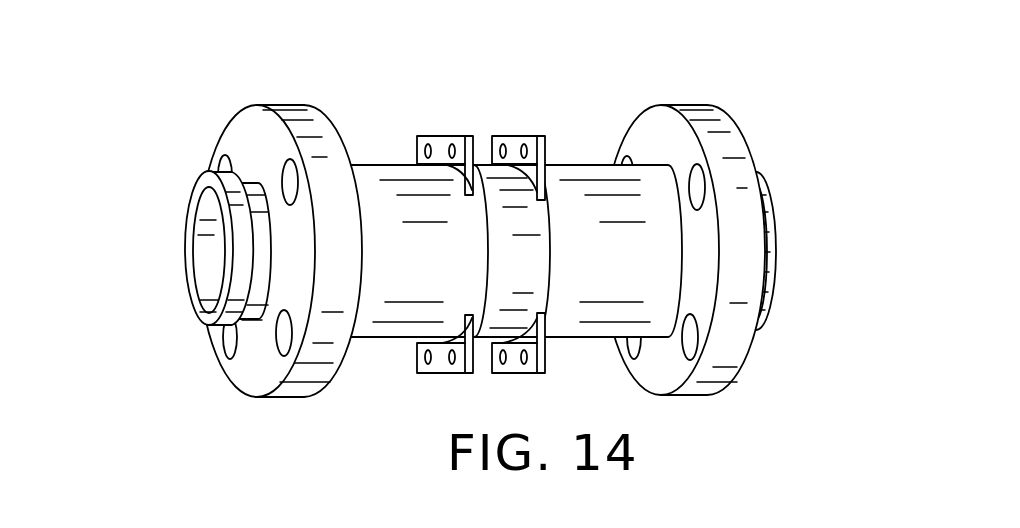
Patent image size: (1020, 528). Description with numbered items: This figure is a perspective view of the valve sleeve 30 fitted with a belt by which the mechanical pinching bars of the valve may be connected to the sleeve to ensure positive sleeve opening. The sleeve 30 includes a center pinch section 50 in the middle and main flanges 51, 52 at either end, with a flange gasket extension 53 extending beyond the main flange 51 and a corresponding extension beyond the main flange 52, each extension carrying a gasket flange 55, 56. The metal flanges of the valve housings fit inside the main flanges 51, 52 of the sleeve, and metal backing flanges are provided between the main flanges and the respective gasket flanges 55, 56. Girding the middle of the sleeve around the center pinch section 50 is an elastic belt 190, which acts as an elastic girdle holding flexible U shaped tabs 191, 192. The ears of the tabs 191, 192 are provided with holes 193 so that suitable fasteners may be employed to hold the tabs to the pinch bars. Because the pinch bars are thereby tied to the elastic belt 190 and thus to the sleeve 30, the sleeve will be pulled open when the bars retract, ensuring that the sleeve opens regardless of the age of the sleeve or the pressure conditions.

The sleeve 30 is at (486, 230).
The center pinch section 50 is at (417, 308).
The main flange 51 is at (285, 104).
The main flange 52 is at (730, 228).
The flange gasket extension 53 is at (188, 297).
The gasket flange 55 is at (206, 178).
The gasket flange 56 is at (776, 235).
The elastic belt 190 is at (532, 256).
The flexible U shaped tab 191 is at (545, 152).
The flexible U shaped tab 192 is at (545, 362).
The holes 193 is at (502, 157).